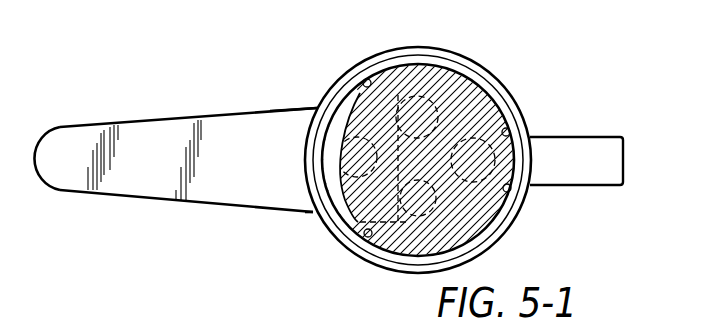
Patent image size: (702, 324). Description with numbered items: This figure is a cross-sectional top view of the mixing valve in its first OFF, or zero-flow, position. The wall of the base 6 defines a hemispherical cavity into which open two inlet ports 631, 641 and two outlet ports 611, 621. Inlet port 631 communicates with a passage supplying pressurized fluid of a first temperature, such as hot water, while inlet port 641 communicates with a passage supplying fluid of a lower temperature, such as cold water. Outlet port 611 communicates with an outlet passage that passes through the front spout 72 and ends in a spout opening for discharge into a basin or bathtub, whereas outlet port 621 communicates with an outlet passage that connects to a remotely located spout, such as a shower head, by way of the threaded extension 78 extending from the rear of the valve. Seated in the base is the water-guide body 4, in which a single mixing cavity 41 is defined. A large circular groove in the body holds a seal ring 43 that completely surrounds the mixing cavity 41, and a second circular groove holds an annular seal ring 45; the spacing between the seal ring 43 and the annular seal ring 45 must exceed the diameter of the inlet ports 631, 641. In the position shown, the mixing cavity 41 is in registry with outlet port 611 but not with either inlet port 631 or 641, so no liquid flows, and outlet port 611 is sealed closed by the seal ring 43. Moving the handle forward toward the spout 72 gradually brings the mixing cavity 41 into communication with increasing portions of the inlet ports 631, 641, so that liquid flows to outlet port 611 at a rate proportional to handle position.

The front spout 72 is at (157, 128).
The mixing cavity 41 is at (318, 107).
The seal ring 43 is at (368, 74).
The water-guide body 4 is at (431, 52).
The inlet port 631 is at (424, 68).
The base 6 is at (468, 58).
The annular seal ring 45 is at (523, 110).
The threaded extension 78 is at (610, 178).
The outlet port 621 is at (512, 222).
The outlet port 611 is at (313, 216).
The inlet port 641 is at (373, 264).